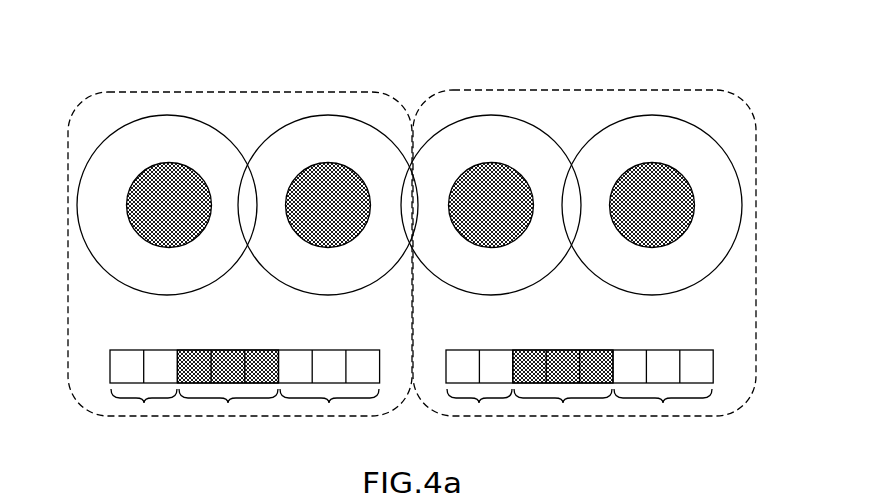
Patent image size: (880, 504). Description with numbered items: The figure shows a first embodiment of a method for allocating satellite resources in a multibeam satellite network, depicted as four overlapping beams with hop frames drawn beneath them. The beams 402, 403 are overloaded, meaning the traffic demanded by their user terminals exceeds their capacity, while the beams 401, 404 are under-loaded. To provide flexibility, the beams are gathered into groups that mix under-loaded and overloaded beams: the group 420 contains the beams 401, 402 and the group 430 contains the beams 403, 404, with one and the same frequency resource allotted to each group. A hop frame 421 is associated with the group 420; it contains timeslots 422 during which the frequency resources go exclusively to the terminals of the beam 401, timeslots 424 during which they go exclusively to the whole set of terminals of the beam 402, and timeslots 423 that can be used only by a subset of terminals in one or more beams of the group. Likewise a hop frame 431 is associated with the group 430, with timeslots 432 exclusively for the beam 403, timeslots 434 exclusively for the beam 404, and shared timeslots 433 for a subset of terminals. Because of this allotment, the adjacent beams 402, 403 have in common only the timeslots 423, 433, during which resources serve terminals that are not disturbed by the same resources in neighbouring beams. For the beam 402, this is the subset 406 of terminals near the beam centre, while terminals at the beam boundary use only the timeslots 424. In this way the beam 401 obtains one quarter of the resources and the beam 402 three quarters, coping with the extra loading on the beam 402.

The group of beams 420 is at (85, 103).
The group of beams 430 is at (735, 99).
The beam 401 is at (202, 121).
The beam 402 is at (320, 121).
The beam 403 is at (517, 121).
The beam 404 is at (660, 121).
The subset of terminals 406 is at (330, 248).
The hop frame 421 is at (110, 370).
The timeslots 422 is at (144, 403).
The timeslots 423 is at (228, 403).
The timeslots 424 is at (329, 403).
The hop frame 431 is at (713, 370).
The timeslots 432 is at (480, 403).
The timeslots 433 is at (564, 403).
The timeslots 434 is at (665, 403).